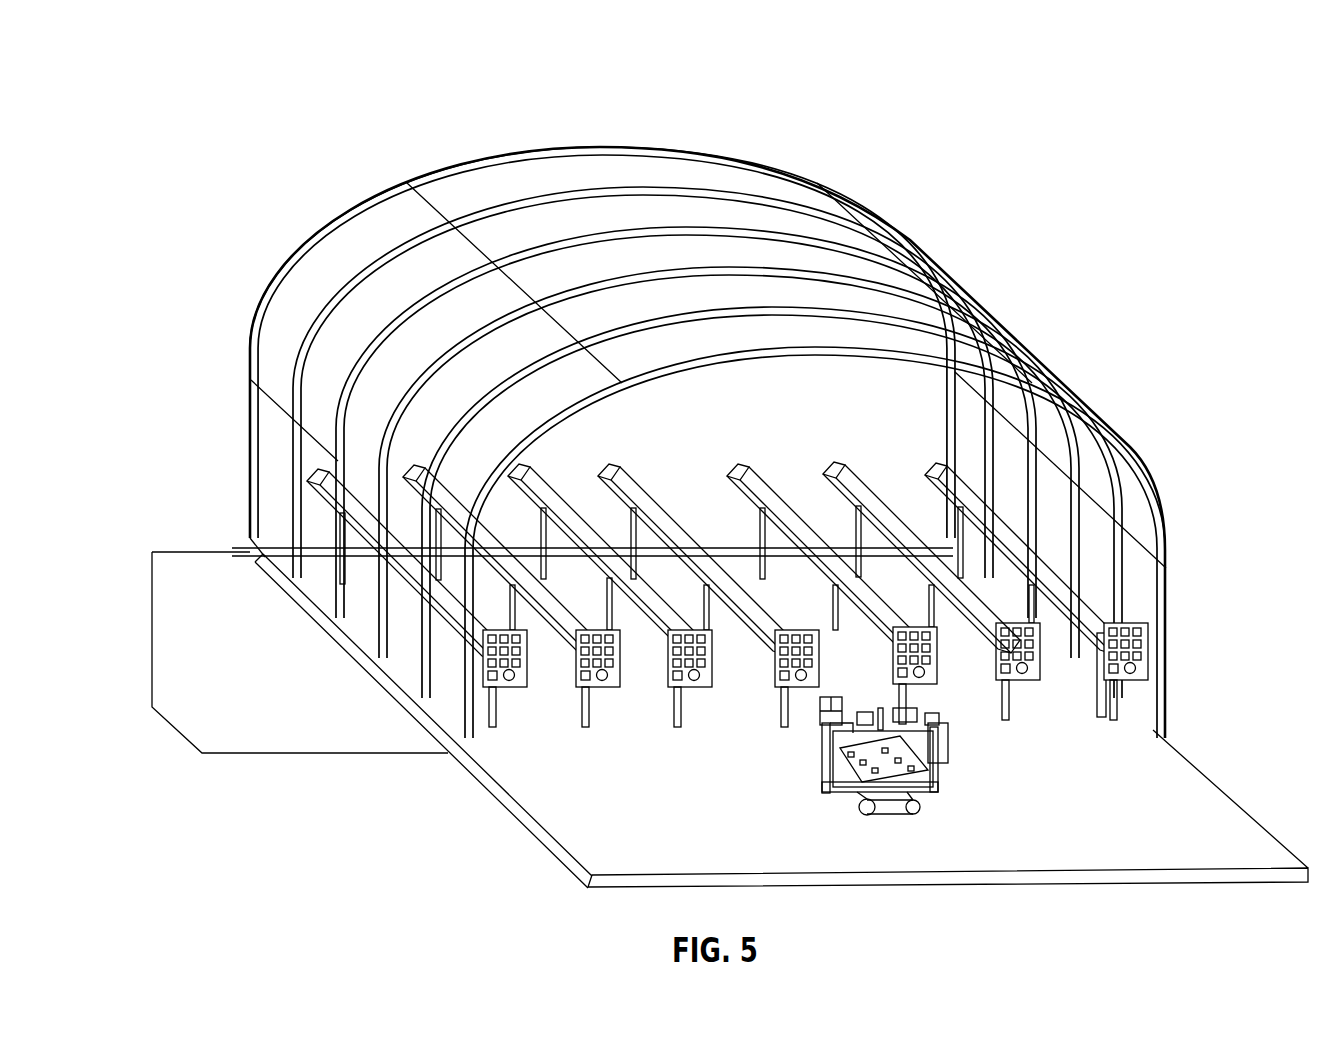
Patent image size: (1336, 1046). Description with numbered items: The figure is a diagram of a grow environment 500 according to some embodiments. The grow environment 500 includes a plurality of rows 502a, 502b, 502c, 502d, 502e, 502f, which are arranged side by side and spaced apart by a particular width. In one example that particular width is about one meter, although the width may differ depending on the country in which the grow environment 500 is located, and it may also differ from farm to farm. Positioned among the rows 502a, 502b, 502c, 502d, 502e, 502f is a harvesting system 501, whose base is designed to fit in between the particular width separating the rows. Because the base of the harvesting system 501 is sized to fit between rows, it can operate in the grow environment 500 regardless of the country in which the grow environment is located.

The grow environment 500 is at (186, 76).
The harvesting system 501 is at (820, 757).
The row 502a is at (335, 478).
The row 502b is at (443, 492).
The row 502c is at (540, 503).
The row 502d is at (648, 511).
The row 502e is at (767, 501).
The row 502f is at (857, 498).